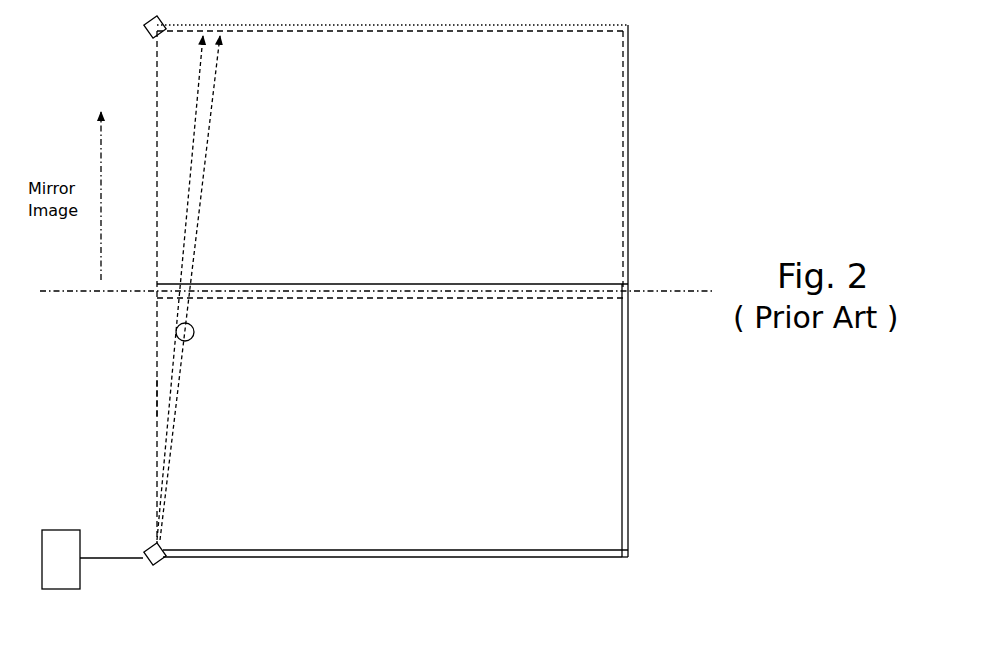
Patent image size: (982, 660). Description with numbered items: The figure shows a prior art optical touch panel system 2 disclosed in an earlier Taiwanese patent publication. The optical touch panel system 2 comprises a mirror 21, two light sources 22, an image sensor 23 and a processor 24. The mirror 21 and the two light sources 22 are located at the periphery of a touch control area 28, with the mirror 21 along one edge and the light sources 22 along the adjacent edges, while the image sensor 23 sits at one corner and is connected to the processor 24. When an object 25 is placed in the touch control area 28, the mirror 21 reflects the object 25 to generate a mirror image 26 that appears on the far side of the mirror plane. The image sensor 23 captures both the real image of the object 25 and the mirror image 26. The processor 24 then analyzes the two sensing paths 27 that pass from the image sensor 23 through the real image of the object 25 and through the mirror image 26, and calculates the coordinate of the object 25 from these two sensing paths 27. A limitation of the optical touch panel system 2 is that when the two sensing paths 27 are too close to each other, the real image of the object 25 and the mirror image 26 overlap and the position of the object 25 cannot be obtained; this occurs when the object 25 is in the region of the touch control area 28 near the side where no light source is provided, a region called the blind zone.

The optical touch panel system 2 is at (443, 286).
The mirror 21 is at (573, 287).
The light sources 22 is at (612, 555).
The image sensor 23 is at (150, 568).
The processor 24 is at (63, 530).
The object 25 is at (178, 330).
The mirror image 26 is at (195, 245).
The sensing paths 27 is at (160, 405).
The touch control area 28 is at (376, 503).